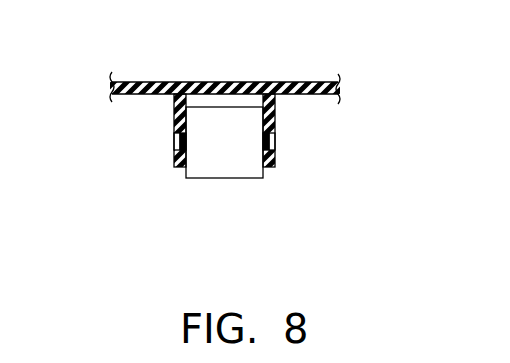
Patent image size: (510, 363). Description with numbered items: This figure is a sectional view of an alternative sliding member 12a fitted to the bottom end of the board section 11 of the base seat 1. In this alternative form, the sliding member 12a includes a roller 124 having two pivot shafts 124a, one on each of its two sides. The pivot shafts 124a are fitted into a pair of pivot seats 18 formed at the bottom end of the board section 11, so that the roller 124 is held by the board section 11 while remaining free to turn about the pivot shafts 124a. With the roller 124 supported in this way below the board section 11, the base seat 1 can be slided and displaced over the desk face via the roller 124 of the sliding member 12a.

The base seat 1 is at (292, 82).
The board section 11 is at (187, 82).
The sliding member 12a is at (362, 228).
The pivot seats 18 is at (174, 122).
The roller 124 is at (232, 160).
The pivot shafts 124a is at (174, 147).